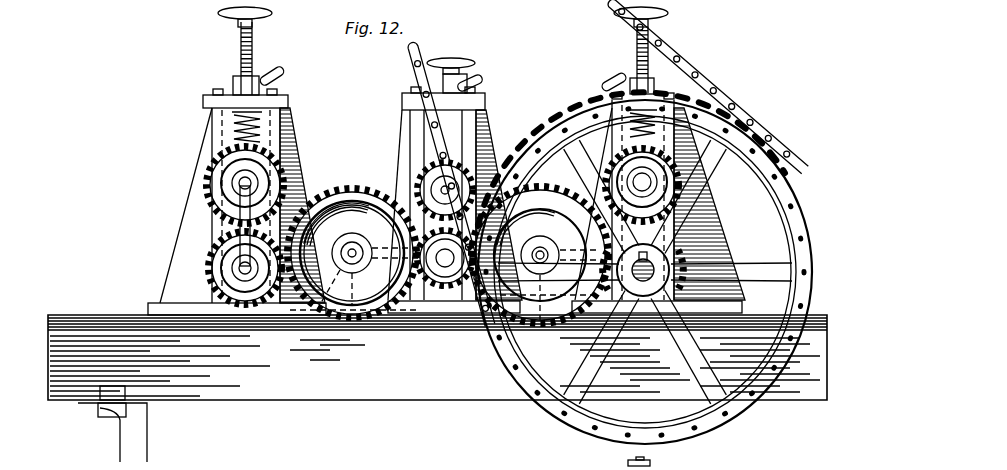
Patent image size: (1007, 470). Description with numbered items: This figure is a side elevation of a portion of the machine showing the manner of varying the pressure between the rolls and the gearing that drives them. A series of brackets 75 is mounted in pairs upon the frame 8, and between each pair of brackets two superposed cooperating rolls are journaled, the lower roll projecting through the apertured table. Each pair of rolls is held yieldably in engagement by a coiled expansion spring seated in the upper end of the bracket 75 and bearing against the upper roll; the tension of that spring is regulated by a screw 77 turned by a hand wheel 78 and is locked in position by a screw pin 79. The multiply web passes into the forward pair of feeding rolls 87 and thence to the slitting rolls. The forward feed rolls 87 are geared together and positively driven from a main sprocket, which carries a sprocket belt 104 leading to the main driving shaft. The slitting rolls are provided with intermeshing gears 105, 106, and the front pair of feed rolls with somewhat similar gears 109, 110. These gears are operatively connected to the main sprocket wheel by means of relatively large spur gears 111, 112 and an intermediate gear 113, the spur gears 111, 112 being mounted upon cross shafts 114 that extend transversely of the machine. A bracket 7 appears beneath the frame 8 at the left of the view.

The bracket 7 is at (147, 440).
The frame 8 is at (437, 357).
The brackets 75 is at (175, 235).
The screw 77 is at (253, 47).
The hand wheel 78 is at (270, 14).
The screw pin 79 is at (284, 72).
The forward pair of feeding rolls 87 is at (656, 185).
The sprocket belt 104 is at (694, 72).
The gear 105 is at (423, 178).
The gear 106 is at (445, 287).
The gear 109 is at (217, 168).
The gear 110 is at (202, 263).
The spur gear 111 is at (342, 313).
The spur gear 112 is at (540, 245).
The intermediate gear 113 is at (445, 308).
The cross shafts 114 is at (351, 250).